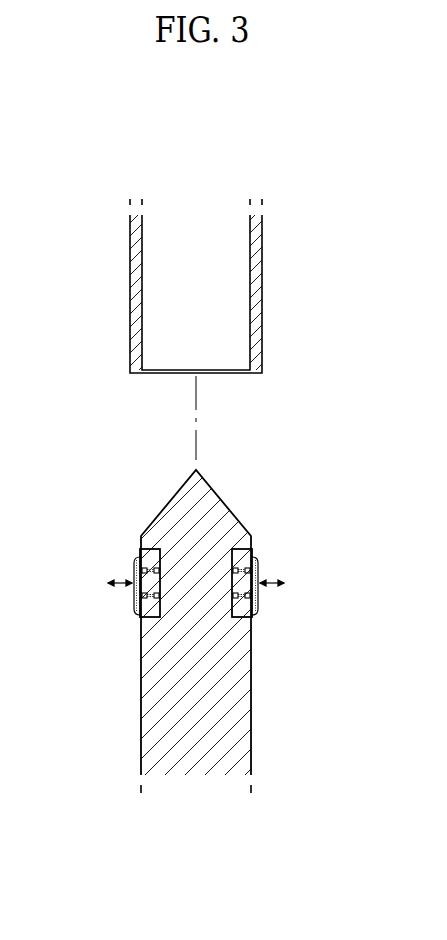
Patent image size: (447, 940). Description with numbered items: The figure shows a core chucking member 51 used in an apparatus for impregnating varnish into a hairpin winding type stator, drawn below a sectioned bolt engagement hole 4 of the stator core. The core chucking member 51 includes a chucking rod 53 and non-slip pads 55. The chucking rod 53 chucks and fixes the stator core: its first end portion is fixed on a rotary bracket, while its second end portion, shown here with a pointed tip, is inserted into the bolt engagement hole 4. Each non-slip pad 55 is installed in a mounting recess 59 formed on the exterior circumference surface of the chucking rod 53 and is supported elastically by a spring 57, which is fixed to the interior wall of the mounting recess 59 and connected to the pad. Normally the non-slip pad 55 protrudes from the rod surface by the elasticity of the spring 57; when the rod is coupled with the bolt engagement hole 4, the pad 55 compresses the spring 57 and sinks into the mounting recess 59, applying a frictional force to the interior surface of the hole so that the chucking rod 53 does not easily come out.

The bolt engagement hole 4 is at (262, 288).
The core chucking member 51 is at (223, 626).
The chucking rod 53 is at (160, 673).
The non-slip pad 55 is at (258, 565).
The spring 57 is at (240, 598).
The mounting recess 59 is at (140, 557).